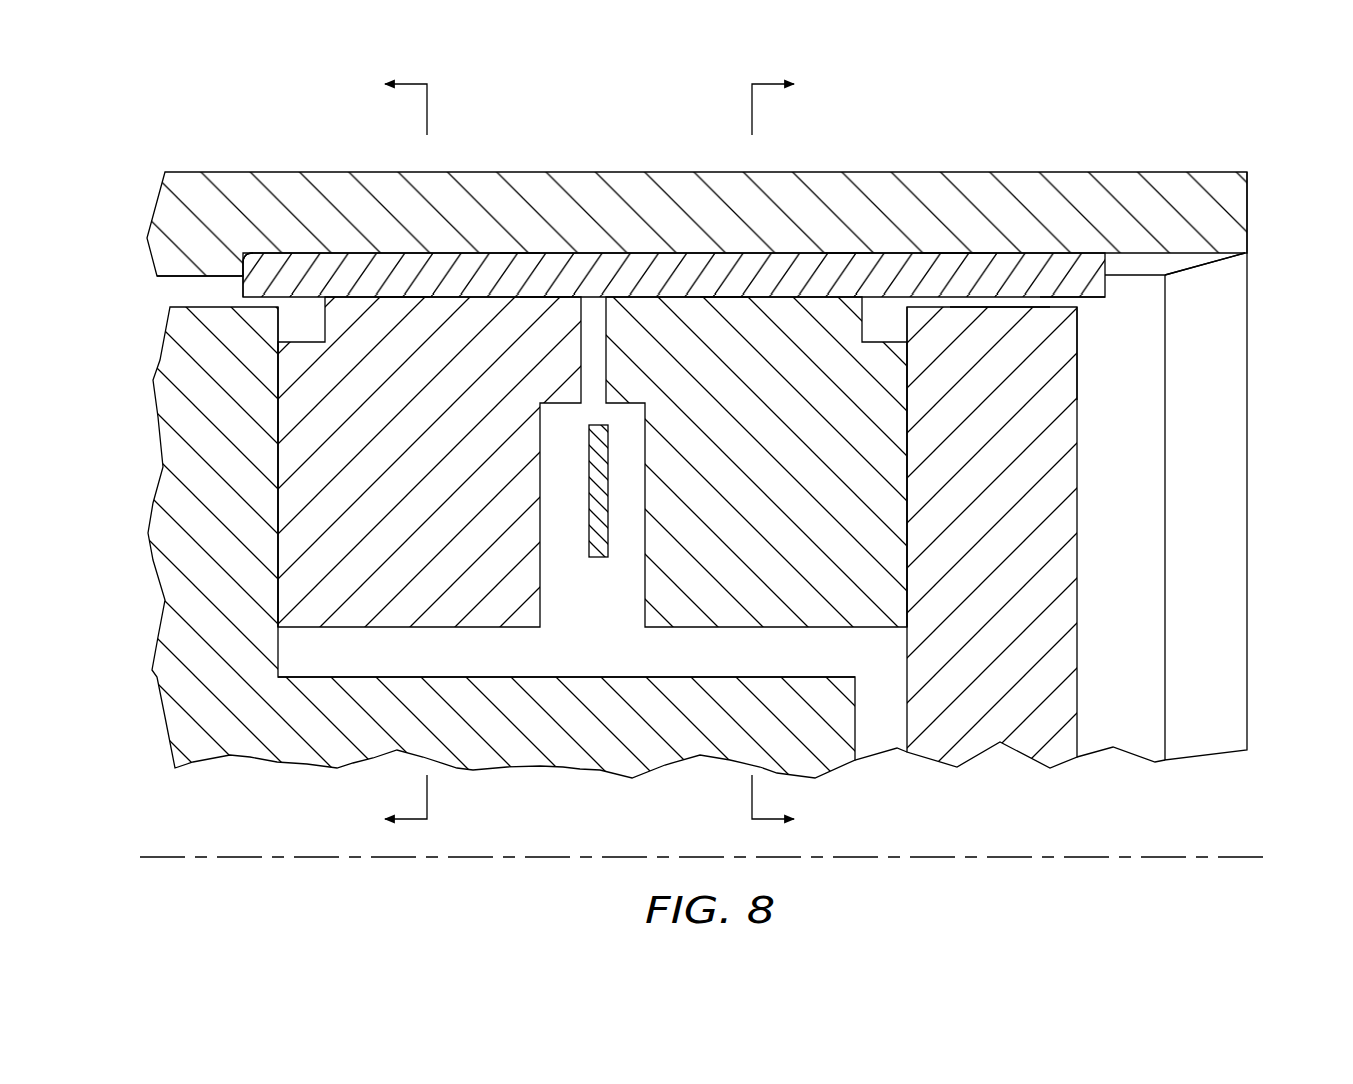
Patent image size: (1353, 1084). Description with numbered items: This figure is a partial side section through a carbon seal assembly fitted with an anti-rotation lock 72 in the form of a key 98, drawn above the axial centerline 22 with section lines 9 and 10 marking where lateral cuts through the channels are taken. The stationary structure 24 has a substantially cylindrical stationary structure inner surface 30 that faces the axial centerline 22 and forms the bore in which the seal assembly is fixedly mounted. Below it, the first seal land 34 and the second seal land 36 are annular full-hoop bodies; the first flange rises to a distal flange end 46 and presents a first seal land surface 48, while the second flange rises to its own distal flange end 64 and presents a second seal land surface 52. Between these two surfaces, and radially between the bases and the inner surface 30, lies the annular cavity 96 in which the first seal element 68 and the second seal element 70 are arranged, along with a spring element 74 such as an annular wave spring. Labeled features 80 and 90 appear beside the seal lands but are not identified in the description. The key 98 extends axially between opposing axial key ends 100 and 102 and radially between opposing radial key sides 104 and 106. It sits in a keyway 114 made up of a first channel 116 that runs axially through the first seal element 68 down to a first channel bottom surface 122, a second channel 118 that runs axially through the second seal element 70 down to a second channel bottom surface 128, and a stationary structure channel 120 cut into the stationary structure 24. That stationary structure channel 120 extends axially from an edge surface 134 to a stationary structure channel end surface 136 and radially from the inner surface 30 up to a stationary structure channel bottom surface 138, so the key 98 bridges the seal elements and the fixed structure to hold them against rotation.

The section line 9- 9 is at (786, 452).
The section line 10- 10 is at (386, 452).
The axial centerline 22 is at (1263, 852).
The stationary structure 24 is at (1220, 170).
The stationary structure inner surface 30 is at (178, 277).
The first seal land 34 is at (1009, 574).
The second seal land 36 is at (224, 559).
The distal flange end 46 is at (1042, 307).
The first seal land surface 48 is at (907, 455).
The second seal land surface 52 is at (278, 457).
The distal flange end 64 is at (211, 305).
The first seal element 68 is at (764, 501).
The second seal element 70 is at (439, 486).
The anti-rotation lock 72 is at (674, 210).
The spring element 74 is at (611, 526).
The edge of right support 80 is at (910, 430).
The edge of left body 90 is at (278, 420).
The annular cavity 96 is at (523, 650).
The key 98 is at (767, 251).
The axial key end 100 is at (1107, 287).
The axial key end 102 is at (244, 292).
The radial key side 104 is at (968, 302).
The radial key side 106 is at (953, 253).
The keyway 114 is at (1159, 194).
The first channel 116 is at (720, 291).
The second channel 118 is at (545, 291).
The stationary structure channel 120 is at (1143, 262).
The first channel bottom surface 122 is at (845, 253).
The second channel bottom surface 128 is at (403, 290).
The edge surface 134 is at (1196, 264).
The stationary structure channel end surface 136 is at (250, 267).
The stationary structure channel bottom surface 138 is at (488, 258).